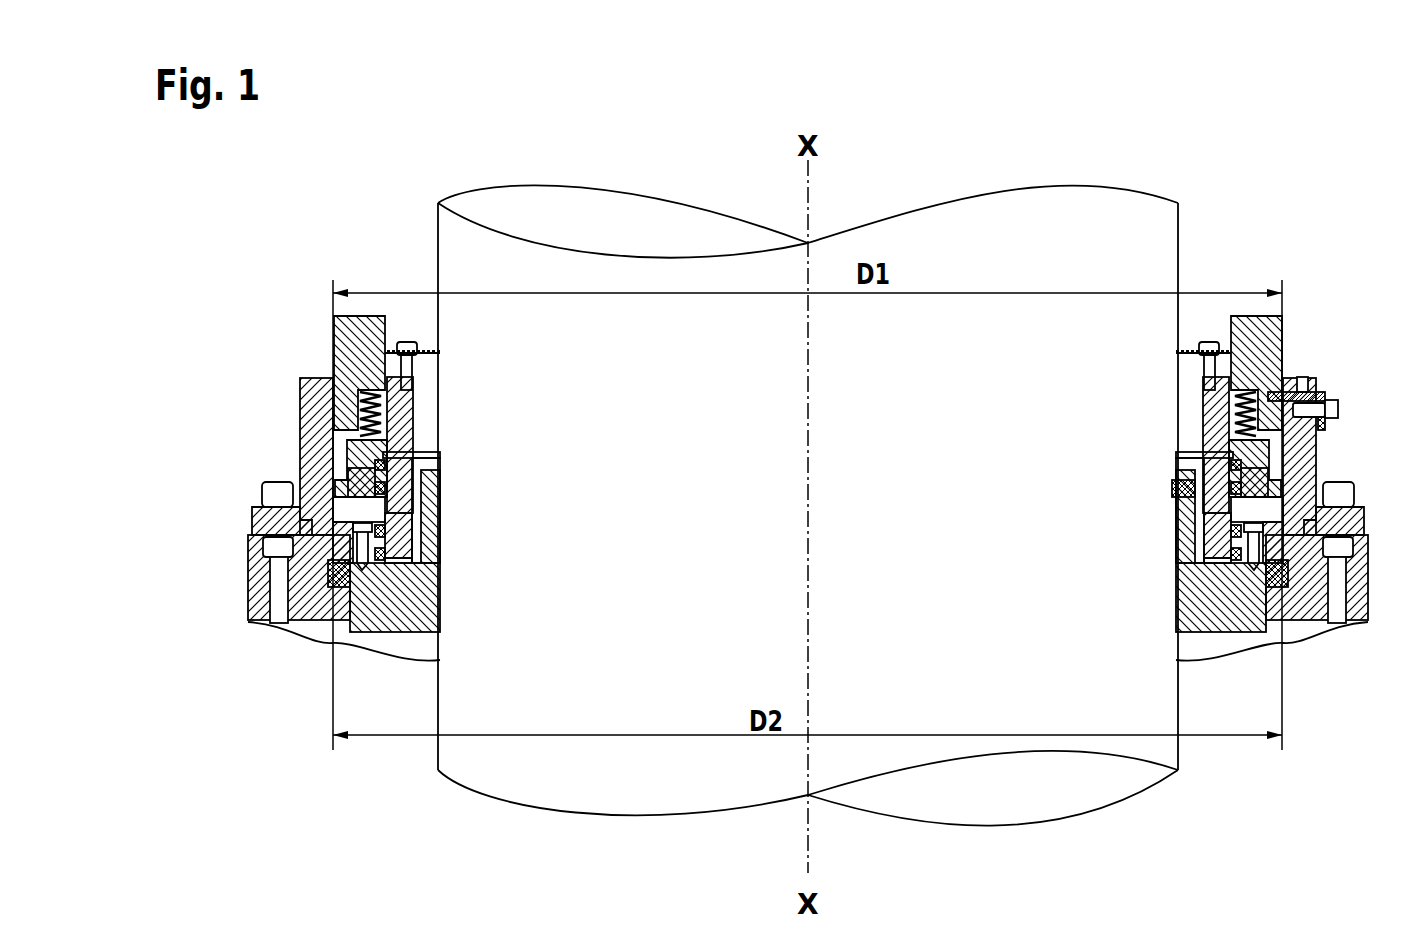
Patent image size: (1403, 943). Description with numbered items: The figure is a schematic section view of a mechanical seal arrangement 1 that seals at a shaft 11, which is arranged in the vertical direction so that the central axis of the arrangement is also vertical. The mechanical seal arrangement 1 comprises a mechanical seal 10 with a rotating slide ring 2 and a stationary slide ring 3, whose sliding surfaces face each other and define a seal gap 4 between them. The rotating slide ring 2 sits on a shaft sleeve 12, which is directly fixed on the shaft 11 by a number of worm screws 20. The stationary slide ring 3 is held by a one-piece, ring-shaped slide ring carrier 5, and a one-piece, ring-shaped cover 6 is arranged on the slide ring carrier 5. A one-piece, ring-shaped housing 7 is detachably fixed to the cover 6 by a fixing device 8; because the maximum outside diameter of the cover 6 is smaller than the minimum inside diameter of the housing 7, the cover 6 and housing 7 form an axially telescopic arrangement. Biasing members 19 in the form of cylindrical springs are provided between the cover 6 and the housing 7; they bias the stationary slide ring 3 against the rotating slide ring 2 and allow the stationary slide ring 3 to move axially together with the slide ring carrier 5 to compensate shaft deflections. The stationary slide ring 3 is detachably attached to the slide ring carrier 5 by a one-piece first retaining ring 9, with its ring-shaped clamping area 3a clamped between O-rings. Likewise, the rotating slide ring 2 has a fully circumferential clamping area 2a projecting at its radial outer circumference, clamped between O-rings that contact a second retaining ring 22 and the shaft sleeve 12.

The mechanical seal arrangement 1 is at (222, 462).
The rotating slide ring 2 is at (400, 540).
The clamping area 2a is at (414, 570).
The stationary slide ring 3 is at (385, 487).
The clamping area 3a is at (385, 472).
The seal gap 4 is at (385, 502).
The slide ring carrier 5 is at (414, 410).
The cover 6 is at (343, 348).
The housing 7 is at (313, 432).
The fixing device 8 is at (1334, 370).
The first retaining ring 9 is at (350, 492).
The mechanical seal 10 is at (428, 515).
The shaft 11 is at (602, 782).
The shaft sleeve 12 is at (387, 613).
The biasing members 19 is at (1233, 425).
The worm screws 20 is at (1178, 490).
The second retaining ring 22 is at (353, 538).